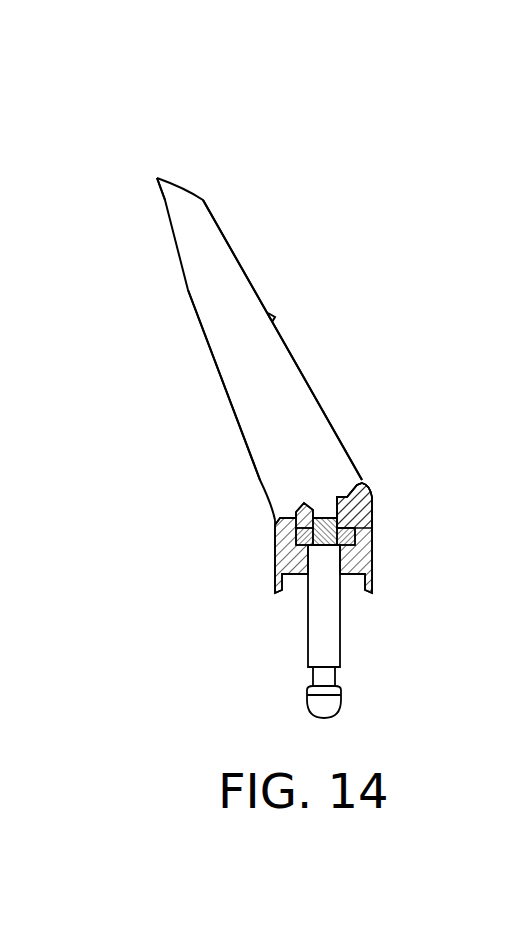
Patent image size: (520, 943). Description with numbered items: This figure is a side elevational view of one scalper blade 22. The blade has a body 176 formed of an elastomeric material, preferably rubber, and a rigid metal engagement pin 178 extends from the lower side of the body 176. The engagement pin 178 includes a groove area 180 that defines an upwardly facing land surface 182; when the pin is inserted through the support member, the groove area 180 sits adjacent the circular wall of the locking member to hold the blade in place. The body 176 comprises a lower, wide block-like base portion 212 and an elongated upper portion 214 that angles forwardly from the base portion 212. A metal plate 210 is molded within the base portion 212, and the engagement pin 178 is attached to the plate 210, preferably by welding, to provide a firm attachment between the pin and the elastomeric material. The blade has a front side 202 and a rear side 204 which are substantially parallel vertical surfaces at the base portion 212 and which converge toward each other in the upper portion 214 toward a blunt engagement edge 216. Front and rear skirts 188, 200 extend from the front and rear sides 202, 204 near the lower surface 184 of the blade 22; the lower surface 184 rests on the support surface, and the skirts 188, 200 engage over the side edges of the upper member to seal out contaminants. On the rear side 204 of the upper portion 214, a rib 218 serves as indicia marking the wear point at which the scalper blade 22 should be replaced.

The scalper blade 22 is at (320, 357).
The body 176 is at (320, 423).
The engagement pins 178 is at (340, 636).
The groove area 180 is at (336, 678).
The land surface 182 is at (307, 690).
The lower surface 184 is at (332, 526).
The front skirt 188 is at (275, 585).
The rear skirt 200 is at (372, 585).
The front side 202 is at (275, 537).
The rear side 204 is at (372, 512).
The metal plate 210 is at (300, 518).
The base portion 212 is at (372, 527).
The upper portion 214 is at (207, 342).
The blunt engagement edge 216 is at (157, 178).
The rib 218 is at (275, 317).